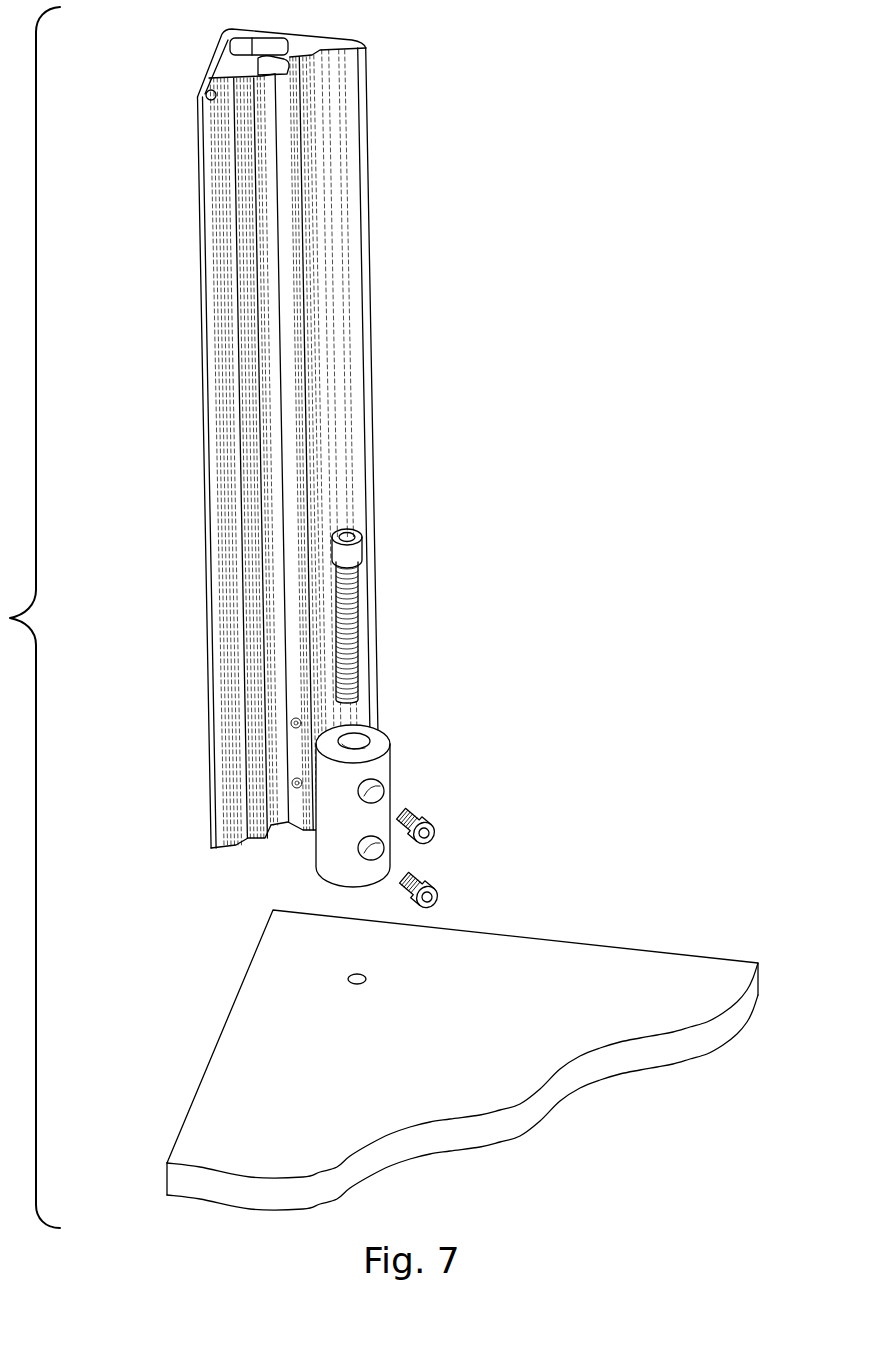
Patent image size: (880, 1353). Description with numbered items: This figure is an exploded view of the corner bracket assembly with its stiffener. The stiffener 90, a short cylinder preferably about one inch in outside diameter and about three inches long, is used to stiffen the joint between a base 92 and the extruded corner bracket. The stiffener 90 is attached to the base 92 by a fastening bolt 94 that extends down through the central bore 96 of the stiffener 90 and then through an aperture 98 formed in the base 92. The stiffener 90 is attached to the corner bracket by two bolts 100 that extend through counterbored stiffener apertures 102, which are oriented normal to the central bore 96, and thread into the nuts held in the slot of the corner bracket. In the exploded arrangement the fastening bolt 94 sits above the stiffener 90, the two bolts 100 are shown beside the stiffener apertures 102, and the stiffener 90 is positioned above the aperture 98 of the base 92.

The stiffener 90 is at (344, 777).
The base 92 is at (462, 1048).
The fastening bolt 94 is at (350, 622).
The central bore 96 is at (367, 750).
The aperture 98 is at (368, 979).
The bolts 100 is at (412, 814).
The counterbored stiffener apertures 102 is at (372, 800).